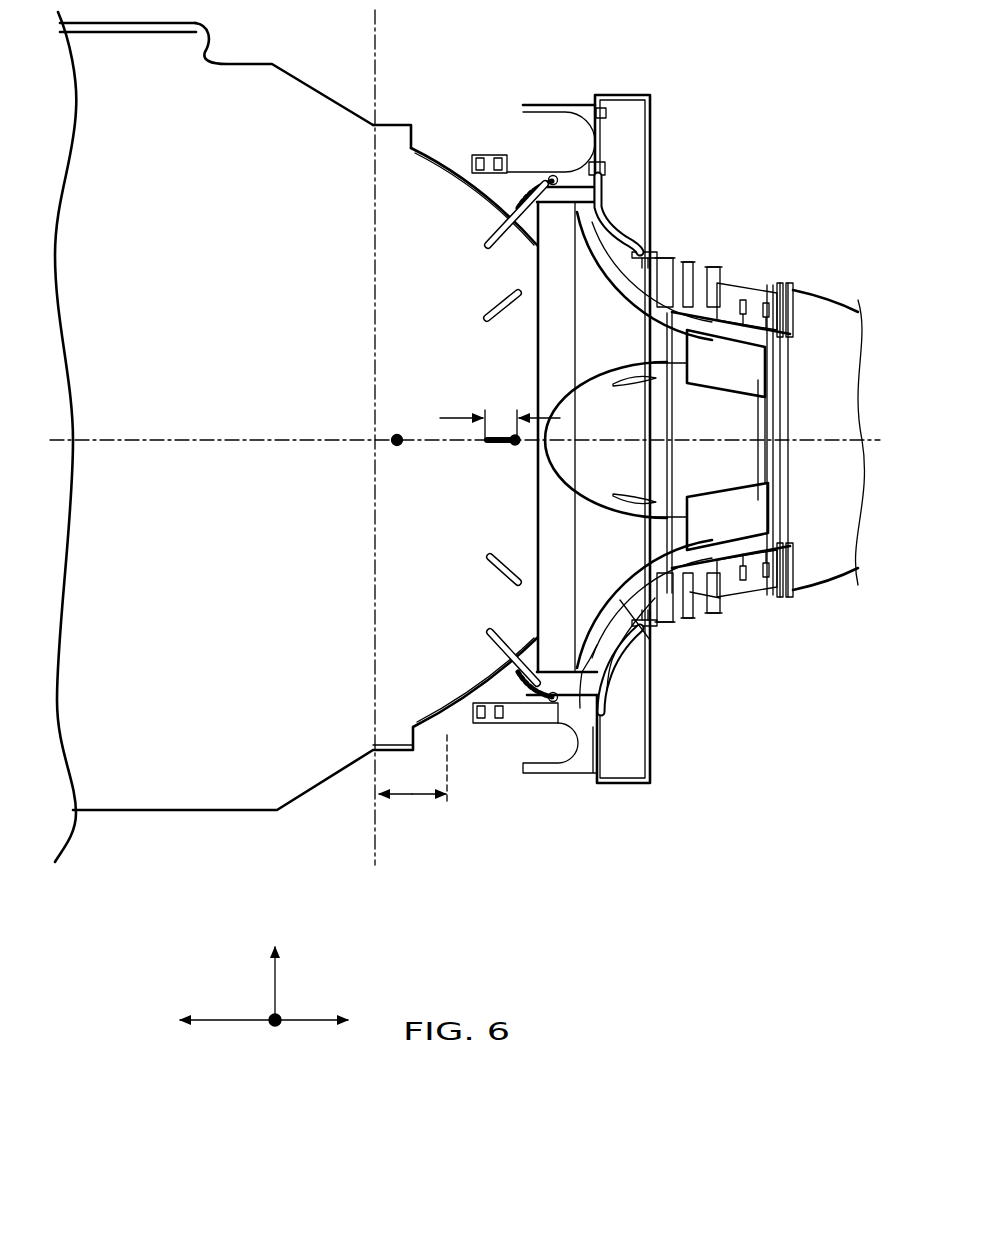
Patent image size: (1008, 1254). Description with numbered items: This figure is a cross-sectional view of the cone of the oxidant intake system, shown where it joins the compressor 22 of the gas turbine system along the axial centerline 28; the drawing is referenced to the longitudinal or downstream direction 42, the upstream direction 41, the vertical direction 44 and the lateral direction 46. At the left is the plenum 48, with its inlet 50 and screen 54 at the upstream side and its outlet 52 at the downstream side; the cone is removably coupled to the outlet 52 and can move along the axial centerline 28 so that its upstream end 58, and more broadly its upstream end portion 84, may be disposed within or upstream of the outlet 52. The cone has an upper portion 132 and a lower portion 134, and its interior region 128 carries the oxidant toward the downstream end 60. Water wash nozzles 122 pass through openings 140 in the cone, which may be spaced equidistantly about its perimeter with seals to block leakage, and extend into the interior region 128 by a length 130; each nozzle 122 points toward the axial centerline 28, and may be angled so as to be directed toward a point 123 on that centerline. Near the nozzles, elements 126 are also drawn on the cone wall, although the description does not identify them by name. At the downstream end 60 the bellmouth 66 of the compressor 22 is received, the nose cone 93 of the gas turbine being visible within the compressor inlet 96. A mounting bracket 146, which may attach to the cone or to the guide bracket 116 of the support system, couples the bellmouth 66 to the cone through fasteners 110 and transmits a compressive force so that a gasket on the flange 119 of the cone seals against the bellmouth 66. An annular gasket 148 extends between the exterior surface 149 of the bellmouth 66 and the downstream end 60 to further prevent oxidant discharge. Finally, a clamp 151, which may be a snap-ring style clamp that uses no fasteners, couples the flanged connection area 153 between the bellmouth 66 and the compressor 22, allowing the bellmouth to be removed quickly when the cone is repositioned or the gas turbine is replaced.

The compressor 22 is at (814, 295).
The axial centerline 28 is at (205, 440).
The upstream direction 41 is at (226, 1020).
The longitudinal axis or downstream direction 42 is at (303, 1023).
The vertical axis or direction 44 is at (273, 988).
The lateral axis or direction 46 is at (274, 1028).
The plenum 48 is at (175, 808).
The inlet 50 is at (199, 36).
The outlet 52 is at (378, 124).
The screen 54 is at (195, 28).
The upstream end 58 is at (401, 124).
The downstream end 60 is at (600, 695).
The bellmouth 66 is at (623, 663).
The upstream end portion 84 is at (413, 773).
The nose cone 93 is at (560, 478).
The inlet 96 is at (653, 335).
The fasteners 110 is at (604, 114).
The guide bracket 116 is at (560, 105).
The flange 119 is at (573, 665).
The water wash nozzles 122 is at (525, 190).
The point 123 is at (400, 447).
The support rods 126 is at (500, 228).
The interior region 128 is at (186, 317).
The length 130 is at (470, 418).
The upper portion 132 is at (469, 52).
The lower portion 134 is at (422, 872).
The openings 140 is at (520, 578).
The mounting bracket 146 is at (652, 160).
The gasket 148 is at (612, 208).
The exterior surface 149 is at (623, 626).
The clamp 151 is at (665, 256).
The flanged connection area 153 is at (696, 573).